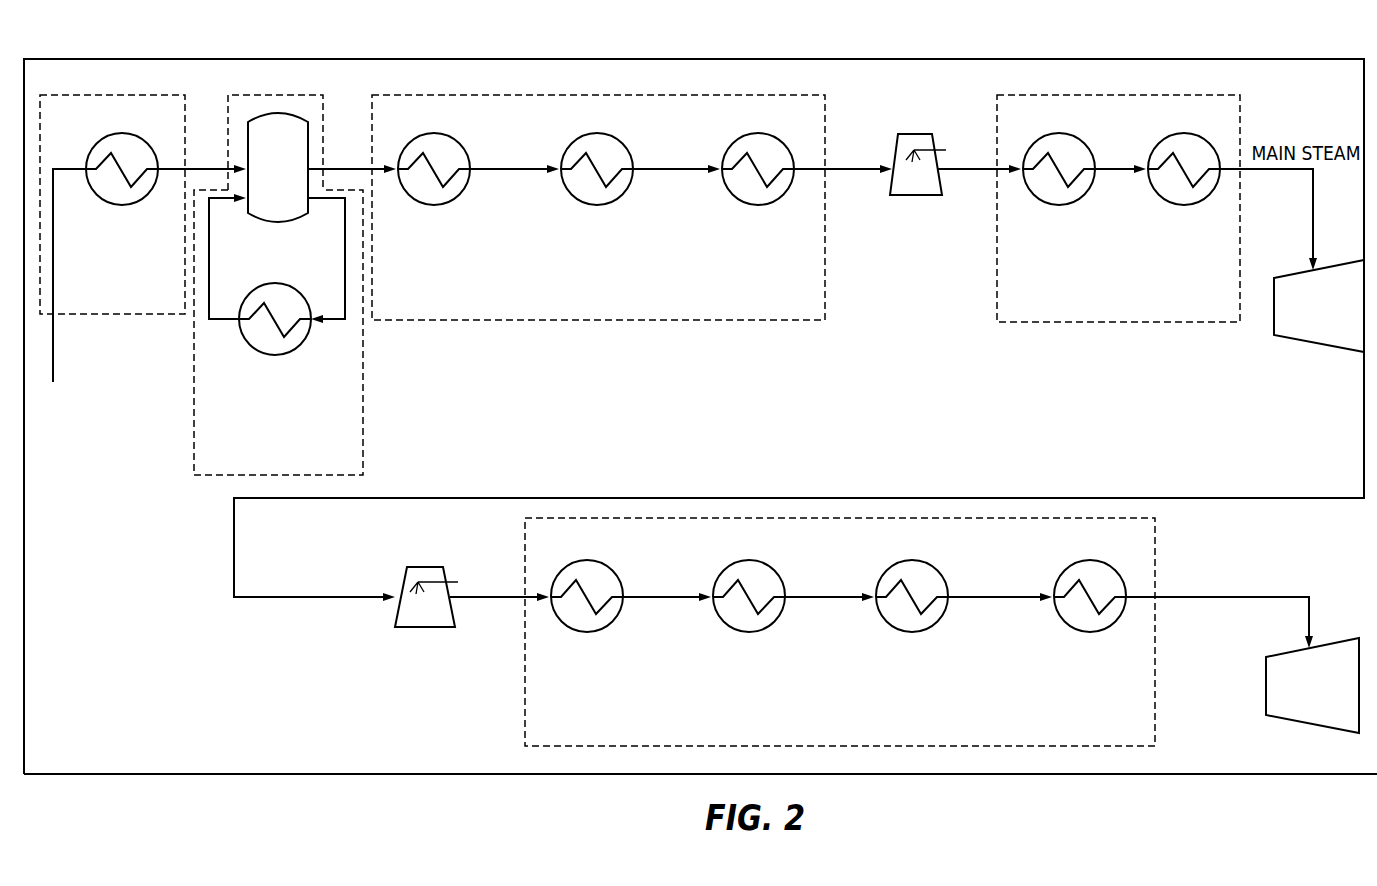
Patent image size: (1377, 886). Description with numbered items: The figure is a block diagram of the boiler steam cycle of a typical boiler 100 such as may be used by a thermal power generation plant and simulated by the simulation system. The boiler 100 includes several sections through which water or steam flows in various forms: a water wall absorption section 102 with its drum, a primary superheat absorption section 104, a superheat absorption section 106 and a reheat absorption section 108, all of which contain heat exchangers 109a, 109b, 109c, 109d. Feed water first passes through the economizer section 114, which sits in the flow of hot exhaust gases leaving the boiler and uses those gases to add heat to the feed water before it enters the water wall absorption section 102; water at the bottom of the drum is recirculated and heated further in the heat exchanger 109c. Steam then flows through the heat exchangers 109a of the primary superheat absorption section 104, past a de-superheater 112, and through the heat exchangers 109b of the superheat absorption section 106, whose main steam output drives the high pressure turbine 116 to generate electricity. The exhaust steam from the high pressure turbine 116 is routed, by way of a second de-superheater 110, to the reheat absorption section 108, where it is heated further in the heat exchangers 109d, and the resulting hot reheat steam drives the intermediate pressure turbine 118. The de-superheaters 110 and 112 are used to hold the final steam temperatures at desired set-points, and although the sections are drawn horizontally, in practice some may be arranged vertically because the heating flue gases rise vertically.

The boiler 100 is at (140, 795).
The water wall absorption section 102 is at (276, 112).
The primary superheat absorption section 104 is at (593, 93).
The superheat absorption section 106 is at (1177, 93).
The reheat absorption section 108 is at (933, 518).
The heat exchangers 109a is at (445, 134).
The heat exchangers 109b is at (1073, 134).
The heat exchanger 109c is at (283, 284).
The heat exchangers 109d is at (597, 556).
The de-superheater 110 is at (428, 566).
The de-superheater 112 is at (916, 133).
The economizer section 114 is at (93, 93).
The high pressure turbine 116 is at (1342, 262).
The intermediate pressure turbine 118 is at (1341, 638).